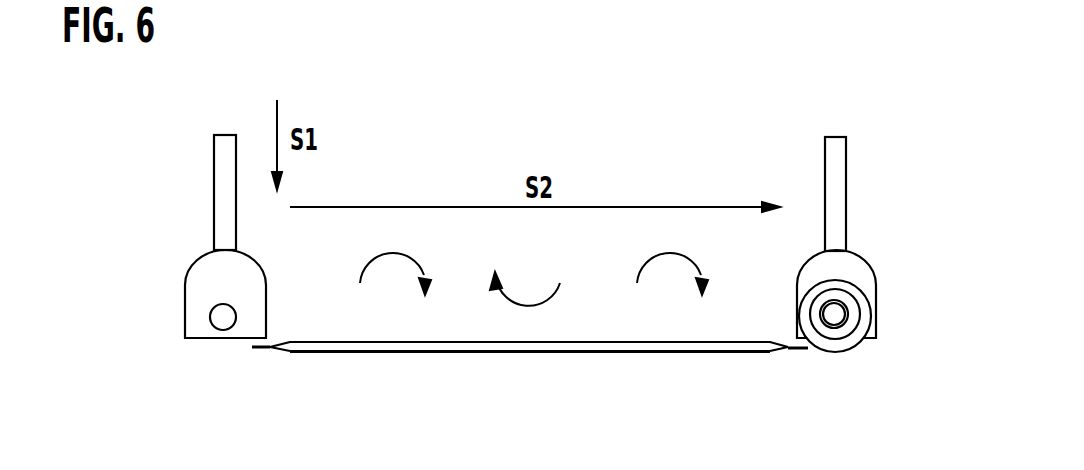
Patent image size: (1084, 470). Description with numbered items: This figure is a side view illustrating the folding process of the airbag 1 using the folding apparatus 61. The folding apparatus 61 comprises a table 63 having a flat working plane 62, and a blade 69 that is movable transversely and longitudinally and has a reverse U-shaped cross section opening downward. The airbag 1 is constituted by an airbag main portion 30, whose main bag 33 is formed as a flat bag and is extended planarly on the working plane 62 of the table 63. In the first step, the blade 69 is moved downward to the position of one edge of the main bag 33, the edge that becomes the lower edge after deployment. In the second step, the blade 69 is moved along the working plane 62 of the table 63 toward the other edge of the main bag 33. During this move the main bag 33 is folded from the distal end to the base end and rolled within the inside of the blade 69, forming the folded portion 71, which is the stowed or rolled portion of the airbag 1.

The airbag 1 is at (860, 347).
The airbag main portion 30 is at (833, 355).
The main bag 33 is at (818, 353).
The folding apparatus 61 is at (210, 371).
The working plane 62 is at (325, 342).
The table 63 is at (412, 353).
The blade 69 is at (197, 268).
The folded portion 71 is at (863, 293).